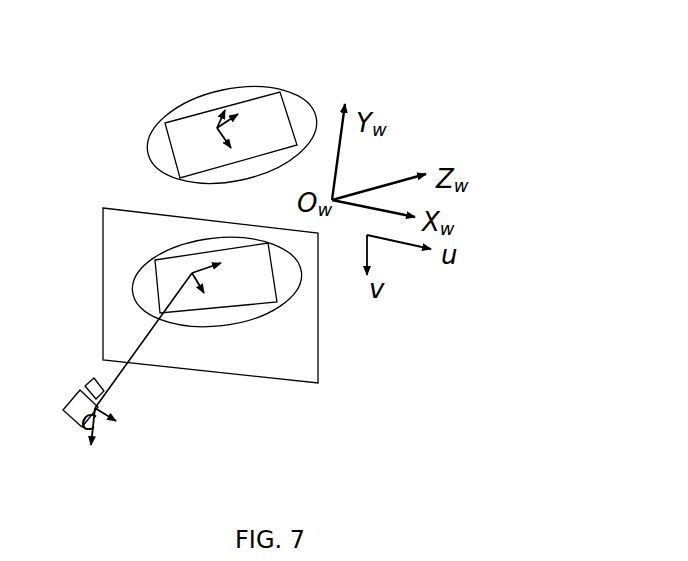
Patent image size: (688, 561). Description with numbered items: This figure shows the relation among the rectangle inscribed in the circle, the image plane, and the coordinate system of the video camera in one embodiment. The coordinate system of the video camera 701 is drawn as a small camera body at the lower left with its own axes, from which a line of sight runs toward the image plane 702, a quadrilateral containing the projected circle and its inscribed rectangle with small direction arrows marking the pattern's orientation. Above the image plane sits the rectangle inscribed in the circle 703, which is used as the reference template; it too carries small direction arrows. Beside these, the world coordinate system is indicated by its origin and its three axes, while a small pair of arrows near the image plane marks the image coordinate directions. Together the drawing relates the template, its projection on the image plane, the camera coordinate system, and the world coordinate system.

The coordinate system of the video camera 701 is at (138, 359).
The image plane 702 is at (272, 295).
The rectangle inscribed in the circle 703 is at (249, 126).